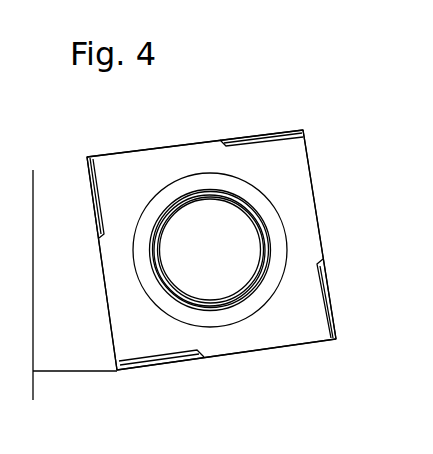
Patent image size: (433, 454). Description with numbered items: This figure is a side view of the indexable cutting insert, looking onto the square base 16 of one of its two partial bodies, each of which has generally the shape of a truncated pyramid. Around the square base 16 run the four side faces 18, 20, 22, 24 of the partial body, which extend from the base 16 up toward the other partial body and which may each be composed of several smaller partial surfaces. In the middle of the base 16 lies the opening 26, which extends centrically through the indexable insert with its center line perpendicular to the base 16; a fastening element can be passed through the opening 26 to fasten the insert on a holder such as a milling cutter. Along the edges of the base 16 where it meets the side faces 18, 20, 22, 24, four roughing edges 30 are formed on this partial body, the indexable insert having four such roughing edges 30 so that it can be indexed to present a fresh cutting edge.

The square base 16 is at (295, 163).
The side face 18 is at (177, 145).
The side face 20 is at (318, 224).
The side face 22 is at (264, 356).
The side face 24 is at (100, 291).
The opening 26 is at (240, 253).
The roughing edge 30 is at (149, 149).